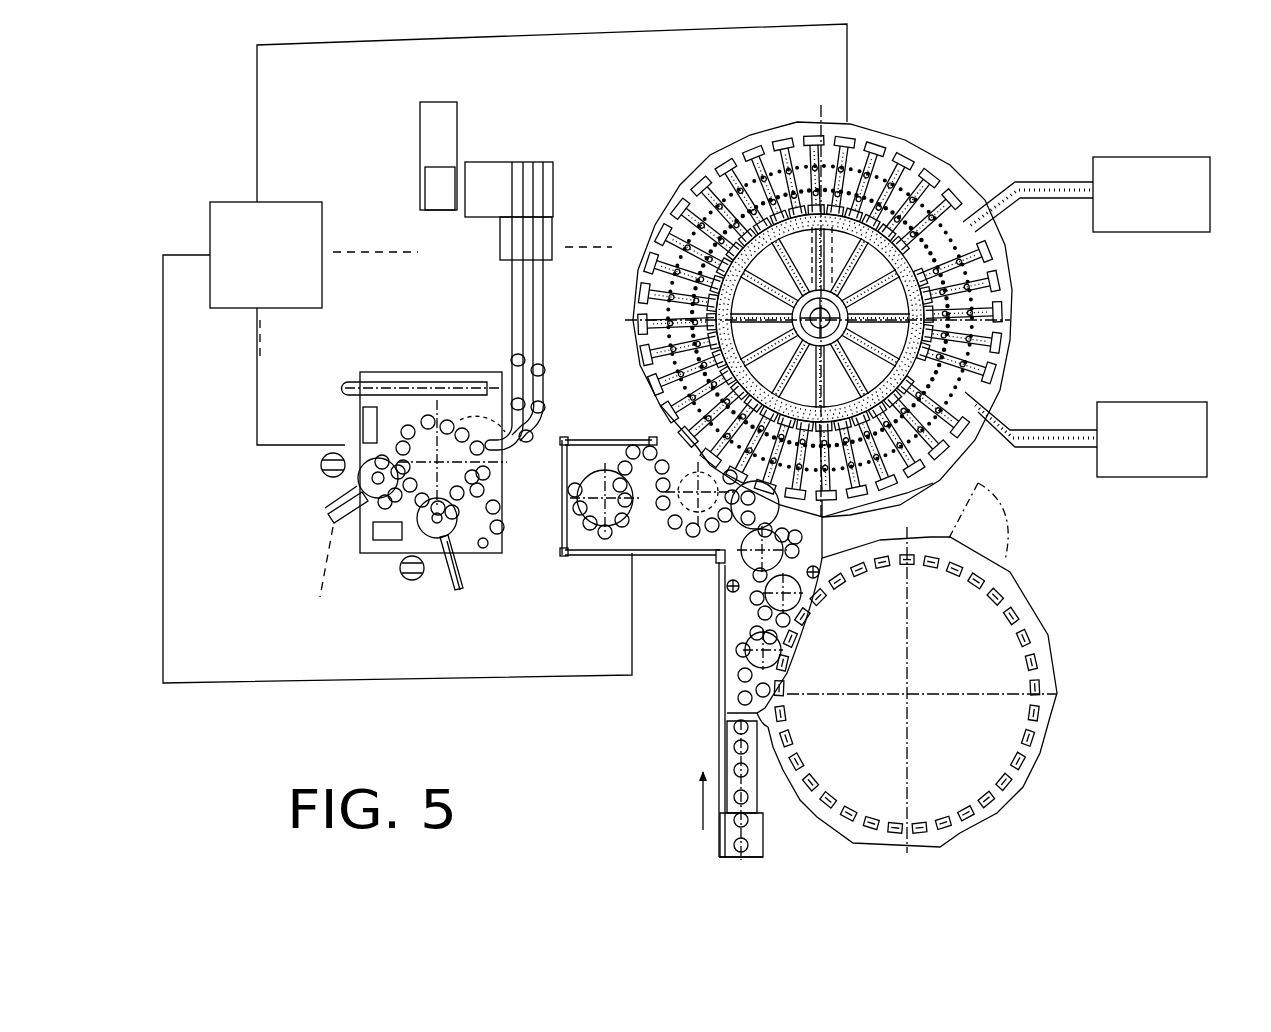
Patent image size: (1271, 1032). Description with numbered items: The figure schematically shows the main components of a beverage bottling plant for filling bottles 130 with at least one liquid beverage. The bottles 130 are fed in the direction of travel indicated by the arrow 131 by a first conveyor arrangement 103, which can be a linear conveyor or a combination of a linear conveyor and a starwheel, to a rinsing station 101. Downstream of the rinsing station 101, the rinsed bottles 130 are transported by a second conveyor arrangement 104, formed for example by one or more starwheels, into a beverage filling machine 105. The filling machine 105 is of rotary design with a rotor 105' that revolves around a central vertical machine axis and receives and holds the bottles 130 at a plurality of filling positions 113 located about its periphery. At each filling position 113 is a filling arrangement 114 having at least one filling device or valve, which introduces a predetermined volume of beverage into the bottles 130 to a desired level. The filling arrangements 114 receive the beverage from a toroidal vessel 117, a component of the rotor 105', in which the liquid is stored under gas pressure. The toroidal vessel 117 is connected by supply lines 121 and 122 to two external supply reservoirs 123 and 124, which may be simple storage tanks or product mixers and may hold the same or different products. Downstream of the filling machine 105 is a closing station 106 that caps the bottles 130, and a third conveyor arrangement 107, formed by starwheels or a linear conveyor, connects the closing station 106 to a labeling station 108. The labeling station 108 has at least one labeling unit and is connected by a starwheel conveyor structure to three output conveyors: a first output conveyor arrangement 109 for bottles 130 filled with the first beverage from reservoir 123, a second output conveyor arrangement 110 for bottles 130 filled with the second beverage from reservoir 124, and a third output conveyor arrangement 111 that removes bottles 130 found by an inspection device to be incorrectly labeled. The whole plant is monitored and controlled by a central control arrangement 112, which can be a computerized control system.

The rinsing station 101 is at (1072, 588).
The first conveyor arrangement 103 is at (757, 778).
The second conveyor arrangement 104 is at (732, 620).
The beverage filling machine 105 is at (879, 312).
The rotor 105' is at (822, 302).
The closing station 106 is at (628, 438).
The third conveyor arrangement 107 is at (569, 573).
The labeling station 108 is at (389, 607).
The first output conveyor arrangement 109 is at (545, 355).
The second output conveyor arrangement 110 is at (513, 290).
The third output conveyor arrangement 111 is at (393, 375).
The central control arrangement 112 is at (281, 272).
The filling positions 113 is at (992, 247).
The filling arrangement 114 is at (988, 345).
The toroidal vessel 117 is at (933, 472).
The supply line 121 is at (1043, 183).
The supply line 122 is at (1045, 425).
The external supply reservoir 123 is at (1200, 202).
The external supply reservoir 124 is at (1210, 447).
The bottles 130 is at (753, 793).
The arrow 131 is at (680, 801).